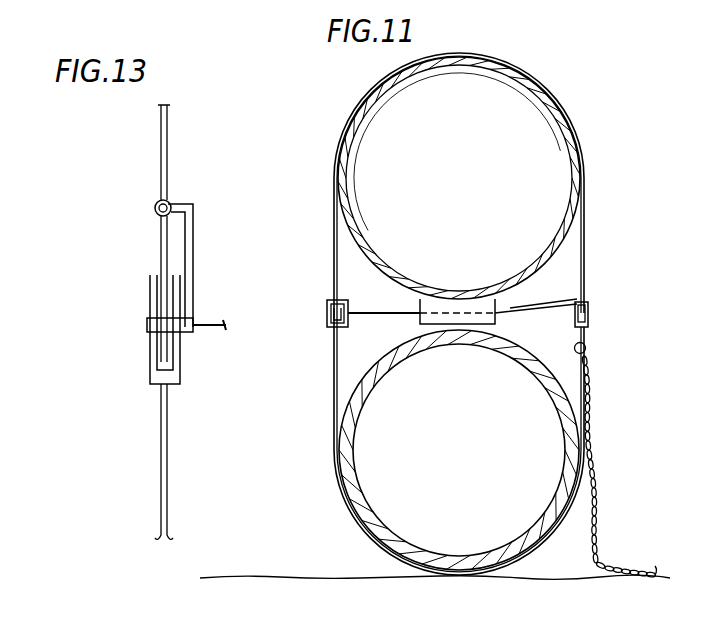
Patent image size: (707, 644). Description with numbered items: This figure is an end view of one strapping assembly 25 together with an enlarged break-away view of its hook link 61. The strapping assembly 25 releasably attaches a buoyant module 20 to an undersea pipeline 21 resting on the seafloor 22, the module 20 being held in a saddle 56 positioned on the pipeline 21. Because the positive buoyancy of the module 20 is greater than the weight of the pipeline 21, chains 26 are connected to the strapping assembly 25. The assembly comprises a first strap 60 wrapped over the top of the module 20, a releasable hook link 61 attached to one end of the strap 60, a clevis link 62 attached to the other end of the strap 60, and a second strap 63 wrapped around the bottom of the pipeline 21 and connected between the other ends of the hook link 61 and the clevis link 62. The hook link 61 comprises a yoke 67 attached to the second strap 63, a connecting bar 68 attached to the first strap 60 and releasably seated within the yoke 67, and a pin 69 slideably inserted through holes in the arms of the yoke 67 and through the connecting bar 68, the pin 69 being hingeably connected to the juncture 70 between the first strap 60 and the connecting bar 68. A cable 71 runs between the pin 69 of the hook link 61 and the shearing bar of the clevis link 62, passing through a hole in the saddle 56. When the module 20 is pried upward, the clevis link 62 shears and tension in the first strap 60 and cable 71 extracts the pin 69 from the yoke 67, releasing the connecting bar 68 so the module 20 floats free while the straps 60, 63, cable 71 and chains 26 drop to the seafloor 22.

In FIG. 11, the buoyant module 20 is at (553, 103).
In FIG. 11, the undersea pipeline 21 is at (346, 473).
In FIG. 11, the seafloor 22 is at (271, 577).
In FIG. 11, the strapping assembly 25 is at (621, 203).
In FIG. 11, the chain 26 is at (593, 477).
In FIG. 11, the saddle 56 is at (497, 318).
In FIG. 11, the first strap 60 is at (333, 247).
In FIG. 13, the first strap 60 is at (168, 149).
In FIG. 11, the hook link 61 is at (326, 307).
In FIG. 13, the hook link 61 is at (195, 244).
In FIG. 11, the clevis link 62 is at (590, 312).
In FIG. 11, the second strap 63 is at (333, 376).
In FIG. 13, the second strap 63 is at (168, 452).
In FIG. 13, the yoke 67 is at (150, 357).
In FIG. 13, the connecting bar 68 is at (160, 236).
In FIG. 13, the pin 69 is at (147, 322).
In FIG. 13, the juncture 70 is at (156, 205).
In FIG. 11, the cable 71 is at (372, 313).
In FIG. 13, the cable 71 is at (213, 326).